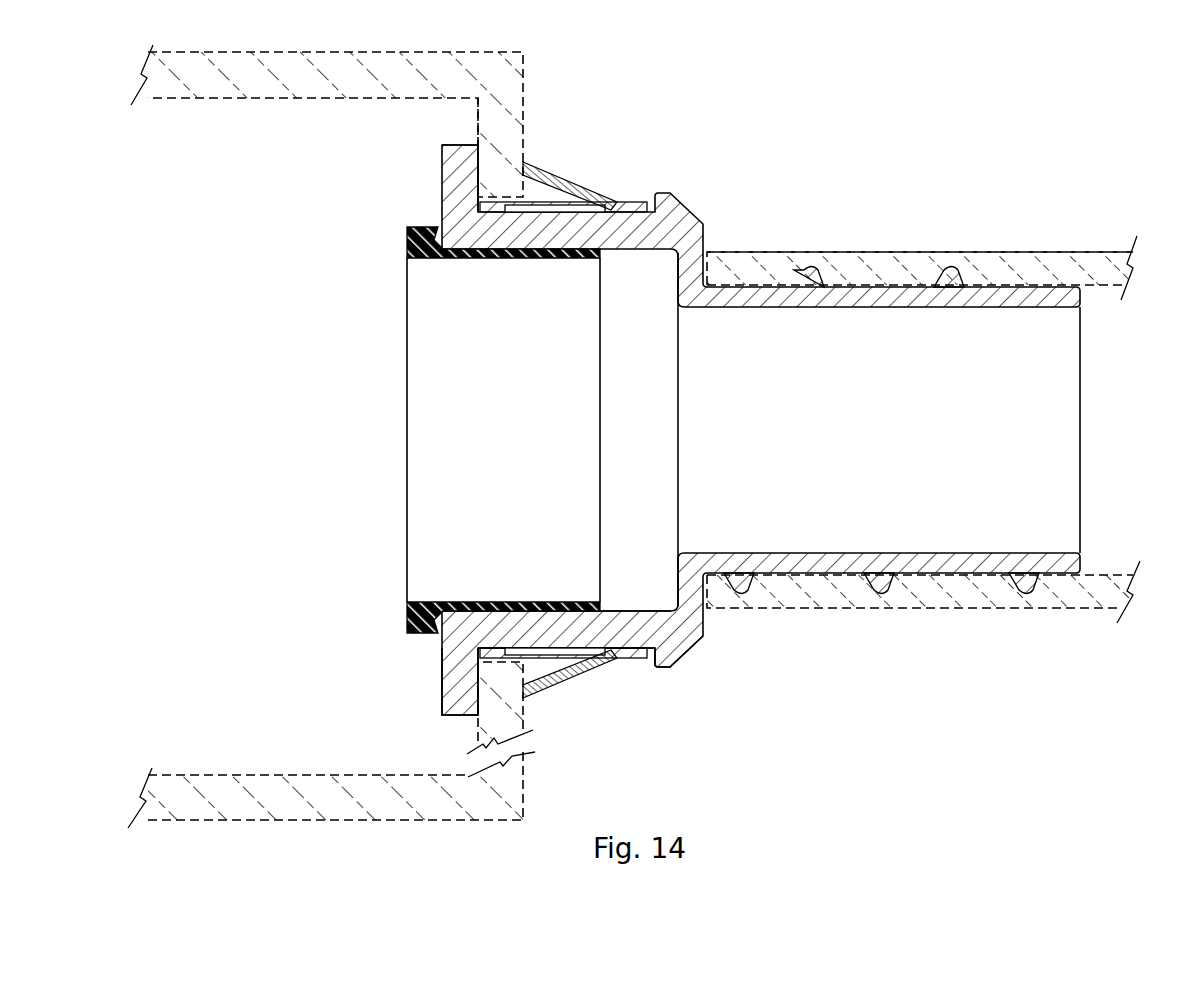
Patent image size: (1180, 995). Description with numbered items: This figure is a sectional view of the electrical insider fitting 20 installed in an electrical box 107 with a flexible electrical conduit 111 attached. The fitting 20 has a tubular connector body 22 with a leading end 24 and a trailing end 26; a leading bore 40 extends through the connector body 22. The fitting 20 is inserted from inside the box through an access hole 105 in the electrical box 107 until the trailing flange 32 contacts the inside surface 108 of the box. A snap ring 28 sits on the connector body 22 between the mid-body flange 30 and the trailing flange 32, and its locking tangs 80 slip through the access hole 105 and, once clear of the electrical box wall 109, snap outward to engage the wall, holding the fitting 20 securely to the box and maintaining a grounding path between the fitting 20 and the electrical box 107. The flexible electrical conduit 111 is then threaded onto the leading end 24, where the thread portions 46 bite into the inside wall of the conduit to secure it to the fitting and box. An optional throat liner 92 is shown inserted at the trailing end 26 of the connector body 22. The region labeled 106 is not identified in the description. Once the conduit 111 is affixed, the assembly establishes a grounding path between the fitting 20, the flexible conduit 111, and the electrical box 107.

The electrical insider fitting 20 is at (697, 200).
The tubular connector body 22 is at (1017, 292).
The leading end 24 is at (1082, 436).
The trailing end 26 is at (442, 656).
The snap ring 28 is at (632, 200).
The mid-body flange 30 is at (662, 668).
The trailing flange 32 is at (462, 716).
The leading bore 40 is at (867, 432).
The thread portions 46 is at (885, 582).
The locking tangs 80 is at (580, 188).
The throat liner 92 is at (492, 438).
The access hole 105 is at (478, 200).
The panel 106 is at (270, 413).
The electrical box 107 is at (526, 66).
The inside surface 108 is at (478, 117).
The electrical box wall 109 is at (500, 113).
The flexible electrical conduit 111 is at (880, 248).